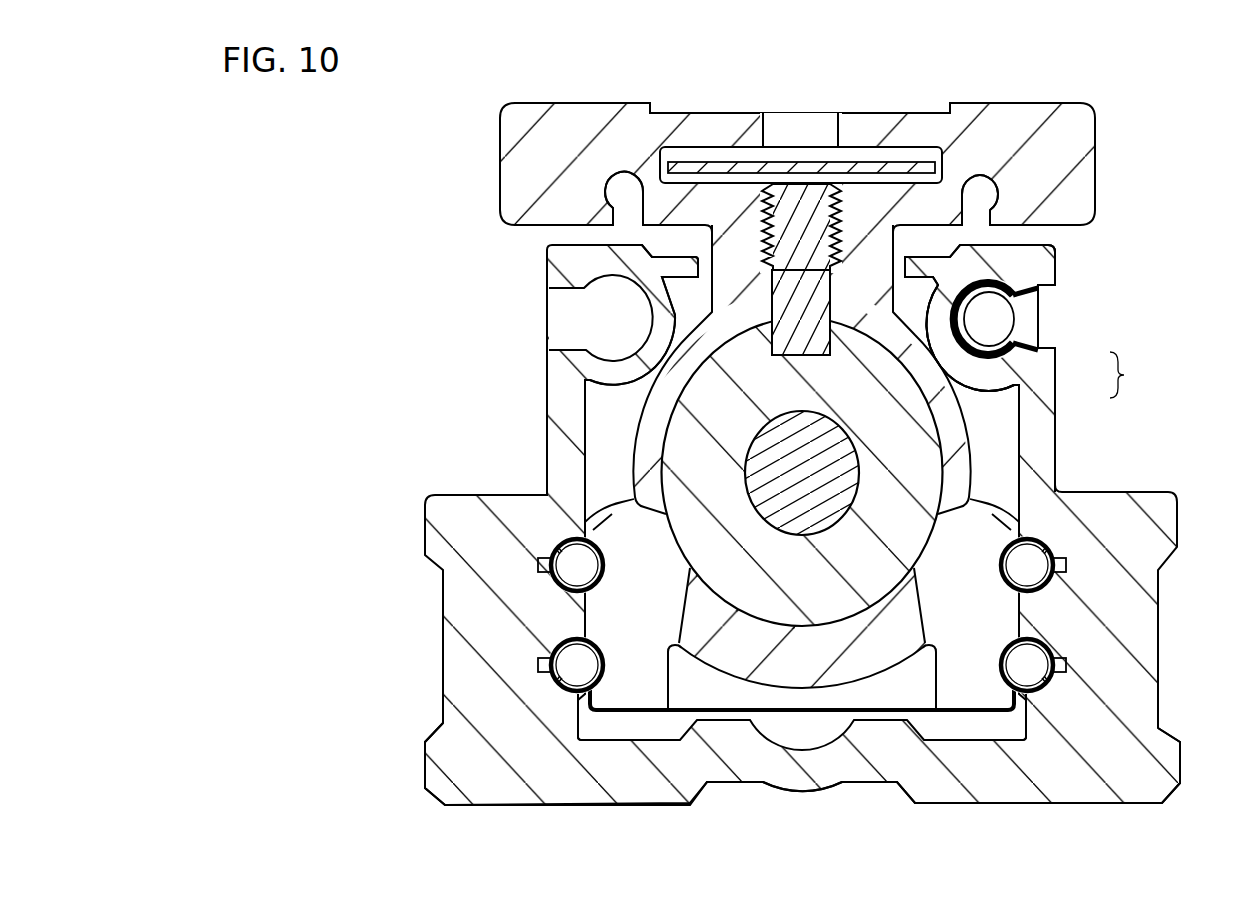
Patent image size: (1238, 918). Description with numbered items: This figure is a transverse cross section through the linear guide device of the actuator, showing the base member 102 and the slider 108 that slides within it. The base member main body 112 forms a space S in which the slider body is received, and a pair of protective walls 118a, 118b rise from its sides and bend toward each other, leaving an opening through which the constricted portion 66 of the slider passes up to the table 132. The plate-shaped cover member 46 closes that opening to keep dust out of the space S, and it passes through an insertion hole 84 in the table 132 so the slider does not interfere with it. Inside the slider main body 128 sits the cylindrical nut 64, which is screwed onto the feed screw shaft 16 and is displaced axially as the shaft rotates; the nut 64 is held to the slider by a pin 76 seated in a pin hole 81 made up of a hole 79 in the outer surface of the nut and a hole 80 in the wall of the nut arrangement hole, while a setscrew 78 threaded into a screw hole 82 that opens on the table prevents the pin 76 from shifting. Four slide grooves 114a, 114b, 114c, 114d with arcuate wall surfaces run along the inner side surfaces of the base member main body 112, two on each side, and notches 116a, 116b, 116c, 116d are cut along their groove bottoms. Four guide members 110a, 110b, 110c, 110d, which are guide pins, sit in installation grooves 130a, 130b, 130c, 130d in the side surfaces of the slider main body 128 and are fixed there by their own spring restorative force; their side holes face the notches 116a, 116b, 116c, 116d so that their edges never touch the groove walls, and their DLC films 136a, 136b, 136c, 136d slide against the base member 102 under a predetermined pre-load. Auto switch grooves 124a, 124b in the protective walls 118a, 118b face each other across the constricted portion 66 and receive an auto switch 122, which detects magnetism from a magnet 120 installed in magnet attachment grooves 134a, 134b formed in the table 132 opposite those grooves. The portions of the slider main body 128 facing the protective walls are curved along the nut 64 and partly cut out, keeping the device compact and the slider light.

The feed screw shaft 16 is at (835, 437).
The cover member 46 is at (922, 166).
The nut 64 is at (868, 580).
The constricted portion 66 is at (868, 262).
The pin 76 is at (783, 347).
The setscrew 78 is at (800, 210).
The hole 79 is at (1020, 380).
The hole 80 is at (1028, 342).
The pin hole 81 is at (1132, 375).
The screw hole 82 is at (775, 238).
The insertion hole 84 is at (707, 150).
The base member 102 is at (1145, 792).
The slider 108 is at (1029, 80).
The guide member 110a is at (1040, 640).
The guide member 110b is at (558, 647).
The guide member 110c is at (1023, 603).
The guide member 110d is at (587, 598).
The base member main body 112 is at (1140, 641).
The slide groove 114a is at (1037, 700).
The slide groove 114b is at (565, 700).
The slide groove 114c is at (1057, 556).
The slide groove 114d is at (547, 556).
The notch 116a is at (1067, 667).
The notch 116b is at (540, 667).
The notch 116c is at (1066, 566).
The notch 116d is at (540, 566).
The protective wall 118a is at (1055, 429).
The protective wall 118b is at (547, 429).
The magnet 120 is at (985, 197).
The auto switch 122 is at (997, 320).
The auto switch groove 124a is at (990, 283).
The auto switch groove 124b is at (615, 274).
The slider main body 128 is at (617, 702).
The installation groove 130a is at (1002, 655).
The installation groove 130b is at (603, 672).
The installation groove 130c is at (1013, 566).
The installation groove 130d is at (592, 570).
The table 132 is at (1038, 103).
The magnet attachment groove 134a is at (972, 186).
The magnet attachment groove 134b is at (633, 186).
The DLC film 136a is at (1020, 714).
The DLC film 136b is at (587, 712).
The DLC film 136c is at (1022, 518).
The DLC film 136d is at (583, 518).
The space S is at (806, 733).